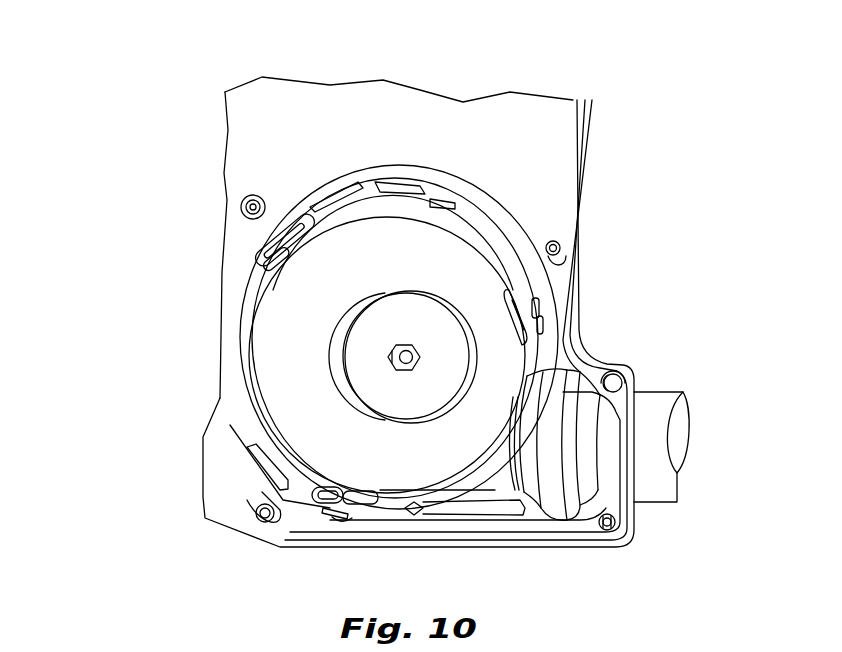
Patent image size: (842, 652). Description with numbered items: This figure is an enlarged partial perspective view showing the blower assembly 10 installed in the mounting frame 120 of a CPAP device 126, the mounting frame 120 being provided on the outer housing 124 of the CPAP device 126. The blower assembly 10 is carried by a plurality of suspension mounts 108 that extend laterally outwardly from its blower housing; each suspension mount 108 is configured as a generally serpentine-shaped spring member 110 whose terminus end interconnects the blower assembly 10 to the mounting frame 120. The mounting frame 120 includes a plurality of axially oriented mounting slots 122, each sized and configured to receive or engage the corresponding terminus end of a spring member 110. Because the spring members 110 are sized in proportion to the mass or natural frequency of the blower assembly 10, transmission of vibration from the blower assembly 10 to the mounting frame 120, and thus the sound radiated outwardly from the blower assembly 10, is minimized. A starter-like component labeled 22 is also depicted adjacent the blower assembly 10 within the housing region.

The blower assembly 10 is at (455, 287).
The starter motor 22 is at (483, 483).
The suspension mount 108 is at (401, 357).
The spring member 110 is at (275, 263).
The mounting frame 120 is at (486, 215).
The mounting slot 122 is at (537, 310).
The outer housing 124 is at (413, 103).
The CPAP device 126 is at (667, 218).